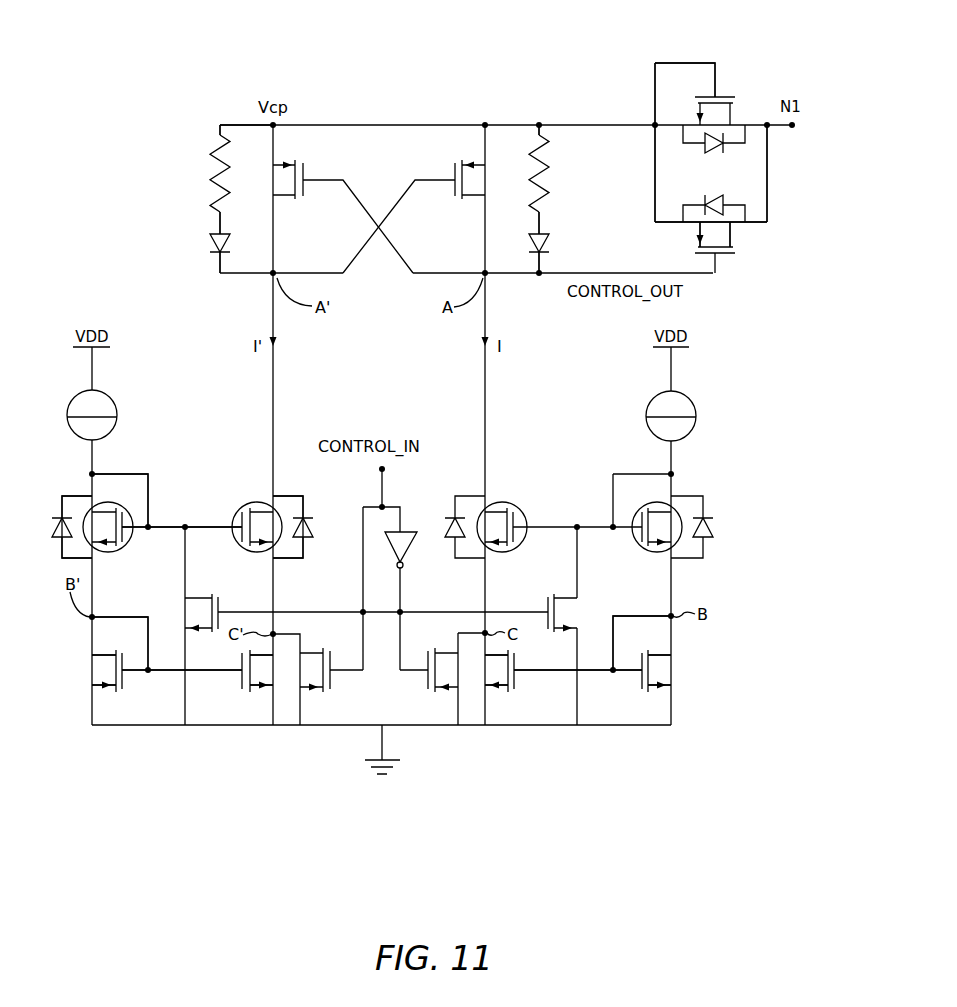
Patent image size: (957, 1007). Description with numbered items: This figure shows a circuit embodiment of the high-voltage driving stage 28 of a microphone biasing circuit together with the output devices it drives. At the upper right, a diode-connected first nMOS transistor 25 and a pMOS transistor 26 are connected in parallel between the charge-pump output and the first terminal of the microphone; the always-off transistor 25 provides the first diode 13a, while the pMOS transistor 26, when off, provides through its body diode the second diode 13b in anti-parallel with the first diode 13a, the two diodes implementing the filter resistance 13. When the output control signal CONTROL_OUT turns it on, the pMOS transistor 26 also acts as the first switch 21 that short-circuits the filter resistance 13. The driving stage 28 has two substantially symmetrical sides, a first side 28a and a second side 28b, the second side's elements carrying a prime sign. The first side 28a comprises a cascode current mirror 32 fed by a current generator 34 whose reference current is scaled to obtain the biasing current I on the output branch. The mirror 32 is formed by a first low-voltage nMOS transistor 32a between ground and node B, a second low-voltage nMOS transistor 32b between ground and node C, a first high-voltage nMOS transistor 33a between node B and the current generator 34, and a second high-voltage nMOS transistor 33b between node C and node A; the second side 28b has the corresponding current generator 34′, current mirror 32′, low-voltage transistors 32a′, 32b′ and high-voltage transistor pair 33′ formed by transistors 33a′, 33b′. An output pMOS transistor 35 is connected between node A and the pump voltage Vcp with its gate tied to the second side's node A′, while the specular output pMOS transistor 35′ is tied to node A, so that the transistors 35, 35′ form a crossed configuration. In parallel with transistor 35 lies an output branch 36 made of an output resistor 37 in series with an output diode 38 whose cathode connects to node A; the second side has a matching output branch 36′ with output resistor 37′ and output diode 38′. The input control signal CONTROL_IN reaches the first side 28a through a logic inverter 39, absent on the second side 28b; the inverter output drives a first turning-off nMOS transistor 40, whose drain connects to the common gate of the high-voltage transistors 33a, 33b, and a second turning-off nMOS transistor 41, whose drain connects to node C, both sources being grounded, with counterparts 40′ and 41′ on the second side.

The high-voltage driving stage 28 is at (125, 112).
The filter resistance 13 is at (641, 117).
The first nMOS transistor 25 is at (723, 96).
The first diode 13a is at (714, 152).
The second diode 13b is at (711, 200).
The first switch 21 is at (684, 241).
The pMOS transistor 26 is at (722, 256).
The output pMOS transistor 35 is at (453, 168).
The output pMOS transistor 35′ is at (303, 168).
The output branch 36 is at (563, 205).
The output branch 36′ is at (203, 262).
The output resistor 37 is at (536, 166).
The output resistor 37′ is at (217, 168).
The output diode 38 is at (548, 243).
The output diode 38′ is at (210, 242).
The current generator 34 is at (677, 400).
The current generator 34′ is at (97, 400).
The current mirror 33′ is at (68, 484).
The first high-voltage nMOS transistor 33a is at (637, 550).
The first high-voltage nMOS transistor 33a′ is at (124, 555).
The second high-voltage nMOS transistor 33b is at (521, 516).
The second high-voltage nMOS transistor 33b′ is at (238, 513).
The first side 28a is at (500, 415).
The second side 28b is at (290, 415).
The logic inverter 39 is at (414, 528).
The cascode current mirror 32 is at (700, 665).
The cascode current mirror 32′ is at (70, 665).
The first low-voltage nMOS transistor 32a is at (641, 680).
The first low-voltage nMOS transistor 32a′ is at (125, 680).
The second low-voltage nMOS transistor 32b is at (514, 680).
The second low-voltage nMOS transistor 32b′ is at (242, 680).
The second turning-off nMOS transistor 41 is at (547, 600).
The second turning-off nMOS transistor 41′ is at (217, 597).
The first turning-off nMOS transistor 40 is at (428, 680).
The first turning-off nMOS transistor 40′ is at (330, 680).